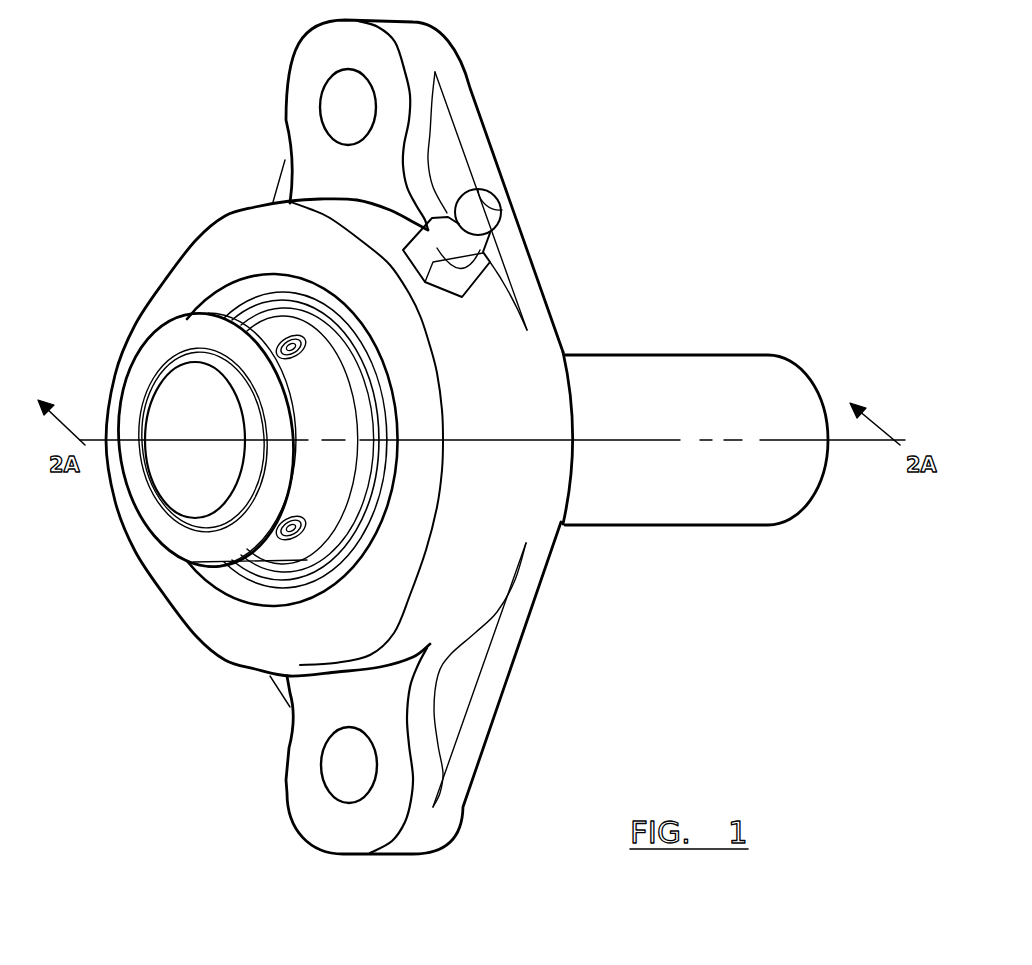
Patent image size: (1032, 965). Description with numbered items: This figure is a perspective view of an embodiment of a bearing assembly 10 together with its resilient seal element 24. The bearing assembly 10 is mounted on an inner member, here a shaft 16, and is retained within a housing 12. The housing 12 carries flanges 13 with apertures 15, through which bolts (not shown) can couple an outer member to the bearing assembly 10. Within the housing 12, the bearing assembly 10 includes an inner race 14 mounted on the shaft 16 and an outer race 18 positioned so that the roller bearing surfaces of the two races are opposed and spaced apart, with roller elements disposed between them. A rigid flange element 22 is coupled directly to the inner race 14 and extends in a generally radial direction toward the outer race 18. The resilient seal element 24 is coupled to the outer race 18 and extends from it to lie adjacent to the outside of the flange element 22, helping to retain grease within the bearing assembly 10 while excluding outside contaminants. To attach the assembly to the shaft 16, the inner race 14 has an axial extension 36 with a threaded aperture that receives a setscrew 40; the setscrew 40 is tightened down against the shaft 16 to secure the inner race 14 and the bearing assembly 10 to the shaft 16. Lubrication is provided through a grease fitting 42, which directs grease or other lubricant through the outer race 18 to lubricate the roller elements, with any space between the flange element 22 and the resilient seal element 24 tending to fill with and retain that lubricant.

The bearing assembly 10 is at (578, 663).
The housing 12 is at (289, 272).
The flanges 13 is at (390, 133).
The inner race 14 is at (340, 350).
The apertures 15 is at (345, 110).
The shaft 16 is at (734, 353).
The outer race 18 is at (288, 272).
The flange element 22 is at (330, 328).
The resilient seal element 24 is at (252, 300).
The axial extension 36 is at (307, 480).
The setscrew 40 is at (290, 538).
The grease fitting 42 is at (492, 183).